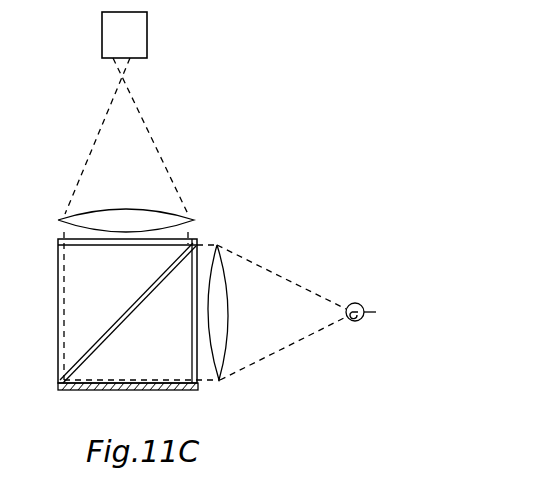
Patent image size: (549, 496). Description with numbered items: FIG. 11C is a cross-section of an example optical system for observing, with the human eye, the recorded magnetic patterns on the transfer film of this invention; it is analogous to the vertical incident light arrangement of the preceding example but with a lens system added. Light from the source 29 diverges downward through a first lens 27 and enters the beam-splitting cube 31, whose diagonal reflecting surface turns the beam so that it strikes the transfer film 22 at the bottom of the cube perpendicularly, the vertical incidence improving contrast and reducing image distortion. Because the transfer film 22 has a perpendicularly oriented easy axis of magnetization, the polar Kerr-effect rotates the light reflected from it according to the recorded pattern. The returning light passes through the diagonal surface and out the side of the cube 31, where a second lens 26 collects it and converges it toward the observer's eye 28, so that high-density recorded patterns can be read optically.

The light source 29 is at (147, 30).
The condenser lens 27 is at (193, 237).
The beam splitter 31 is at (85, 350).
The photoconductive member 22 is at (81, 391).
The viewing lens 26 is at (203, 384).
The observer's eye 28 is at (363, 320).